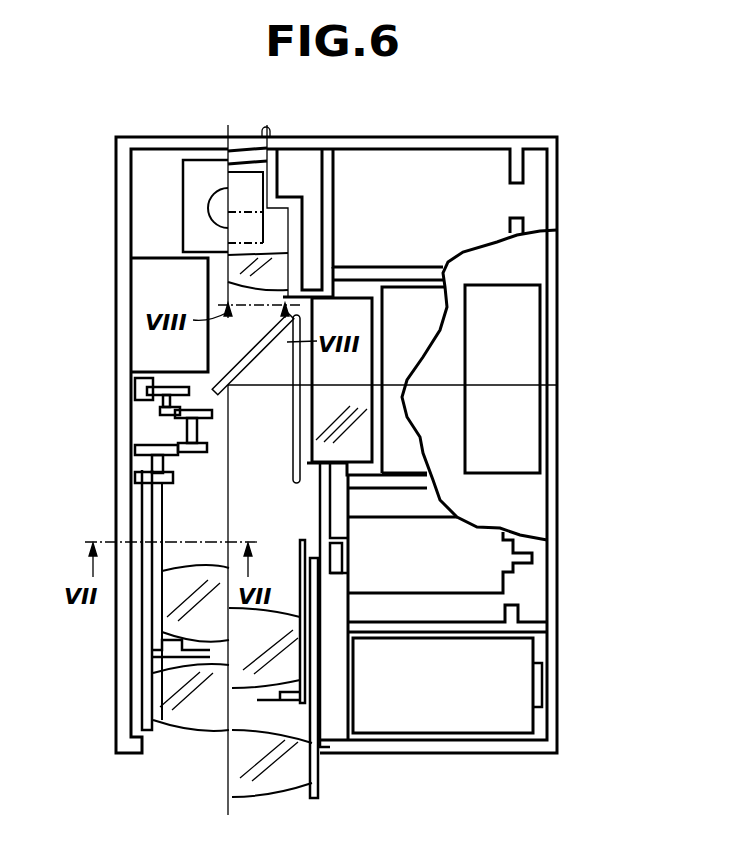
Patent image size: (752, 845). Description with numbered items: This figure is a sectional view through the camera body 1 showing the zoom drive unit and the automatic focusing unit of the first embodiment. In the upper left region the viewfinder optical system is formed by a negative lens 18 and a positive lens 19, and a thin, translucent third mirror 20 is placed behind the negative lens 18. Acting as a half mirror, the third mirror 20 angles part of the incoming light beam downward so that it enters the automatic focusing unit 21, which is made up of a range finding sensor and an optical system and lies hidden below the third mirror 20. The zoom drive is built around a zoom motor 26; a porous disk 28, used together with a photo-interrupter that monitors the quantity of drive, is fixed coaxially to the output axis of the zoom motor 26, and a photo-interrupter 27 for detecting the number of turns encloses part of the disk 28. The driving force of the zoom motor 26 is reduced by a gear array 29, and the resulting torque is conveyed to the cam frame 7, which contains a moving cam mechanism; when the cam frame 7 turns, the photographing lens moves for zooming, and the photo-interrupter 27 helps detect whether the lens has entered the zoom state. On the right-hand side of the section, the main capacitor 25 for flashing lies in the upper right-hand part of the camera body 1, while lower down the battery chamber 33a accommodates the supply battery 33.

The camera body 1 is at (460, 137).
The cam frame 7 is at (137, 503).
The negative lens 18 is at (285, 200).
The positive lens 19 is at (248, 183).
The third mirror 20 is at (250, 185).
The automatic focusing unit 21 is at (186, 178).
The main capacitor 25 is at (527, 388).
The zoom motor 26 is at (135, 290).
The photo-interrupter 27 is at (143, 388).
The porous disk 28 is at (158, 385).
The gear array 29 is at (95, 405).
The supply battery 33 is at (518, 657).
The battery chamber 33a is at (543, 725).